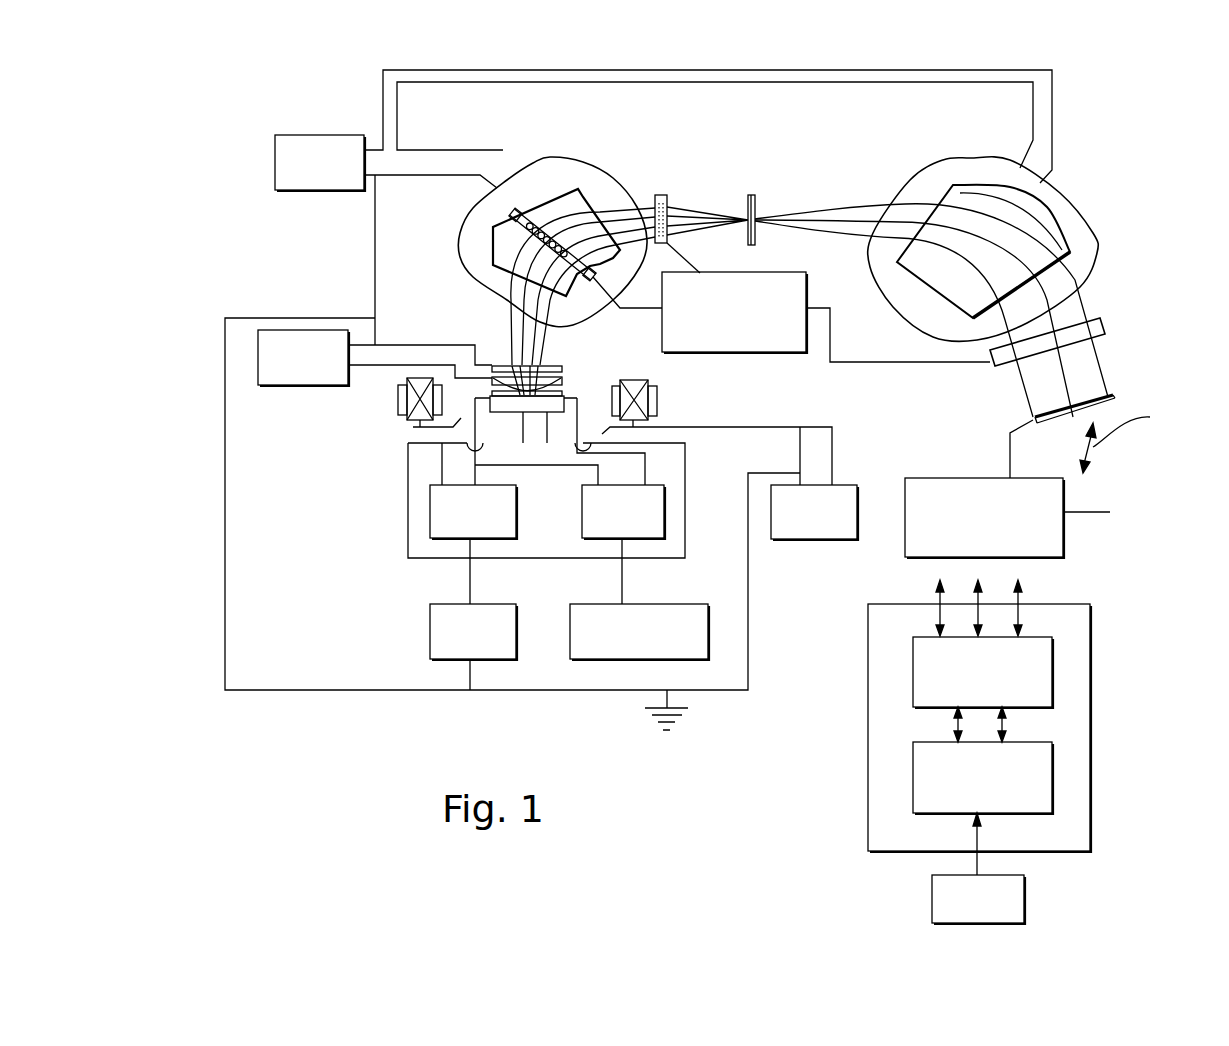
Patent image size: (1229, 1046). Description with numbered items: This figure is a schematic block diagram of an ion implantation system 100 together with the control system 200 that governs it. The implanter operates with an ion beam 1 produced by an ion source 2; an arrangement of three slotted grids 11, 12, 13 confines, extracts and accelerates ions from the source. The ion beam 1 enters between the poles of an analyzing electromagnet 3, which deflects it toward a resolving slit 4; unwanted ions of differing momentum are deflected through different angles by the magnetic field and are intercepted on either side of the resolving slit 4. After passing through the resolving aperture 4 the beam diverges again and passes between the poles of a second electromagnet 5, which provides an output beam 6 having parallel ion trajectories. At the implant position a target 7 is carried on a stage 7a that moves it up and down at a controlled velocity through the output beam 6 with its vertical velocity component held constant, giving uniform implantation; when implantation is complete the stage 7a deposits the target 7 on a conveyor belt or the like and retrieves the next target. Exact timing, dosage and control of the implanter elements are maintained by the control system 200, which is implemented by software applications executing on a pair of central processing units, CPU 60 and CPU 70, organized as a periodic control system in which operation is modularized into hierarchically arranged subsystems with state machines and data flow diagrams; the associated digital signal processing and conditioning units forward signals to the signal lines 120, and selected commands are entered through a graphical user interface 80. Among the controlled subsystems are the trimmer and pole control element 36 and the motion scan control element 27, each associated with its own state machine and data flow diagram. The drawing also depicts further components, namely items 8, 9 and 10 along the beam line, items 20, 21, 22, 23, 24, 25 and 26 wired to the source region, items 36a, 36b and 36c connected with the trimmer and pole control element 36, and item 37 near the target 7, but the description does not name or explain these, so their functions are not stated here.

The ion beam 1 is at (510, 318).
The ion source 2 is at (517, 413).
The analyzing electromagnet 3 is at (502, 254).
The resolving slit 4 is at (757, 205).
The second electromagnet 5 is at (1047, 240).
The output beam 6 is at (1060, 310).
The target 7 is at (1097, 390).
The stage 7a is at (1073, 418).
The analyzing magnet 8 is at (585, 164).
The bending magnet 9 is at (957, 162).
The quadrupole lens 10 is at (407, 415).
The slotted grid 11 is at (562, 388).
The slotted grid 12 is at (562, 371).
The slotted grid 13 is at (480, 366).
The 80 kV power supply 20 is at (430, 628).
The isolation transformer 21 is at (678, 603).
The 2 kV power supply 22 is at (320, 386).
The 170 A power supply 23 is at (304, 191).
The 20 A power supply 24 is at (812, 540).
The 0-200 A power supply 25 is at (582, 492).
The 60-100 V power supply 26 is at (518, 492).
The motion scan control element 27 is at (928, 475).
The trimmer and pole control element 36 is at (812, 282).
The control line 36a is at (920, 362).
The pole control line 36b is at (648, 309).
The trimmer slit 36c is at (698, 266).
The beam scanner 37 is at (1107, 327).
The CPU 60 is at (913, 670).
The CPU 70 is at (913, 785).
The graphical user interface 80 is at (931, 900).
The ion implantation system 100 is at (735, 155).
The signal lines 120 is at (1022, 588).
The control system 200 is at (1093, 580).